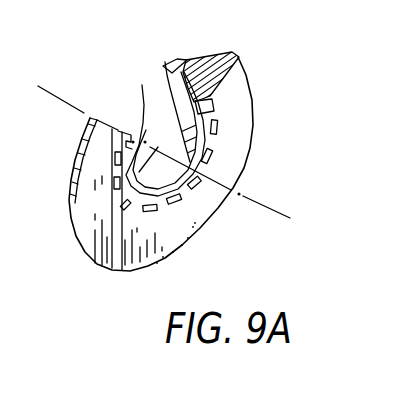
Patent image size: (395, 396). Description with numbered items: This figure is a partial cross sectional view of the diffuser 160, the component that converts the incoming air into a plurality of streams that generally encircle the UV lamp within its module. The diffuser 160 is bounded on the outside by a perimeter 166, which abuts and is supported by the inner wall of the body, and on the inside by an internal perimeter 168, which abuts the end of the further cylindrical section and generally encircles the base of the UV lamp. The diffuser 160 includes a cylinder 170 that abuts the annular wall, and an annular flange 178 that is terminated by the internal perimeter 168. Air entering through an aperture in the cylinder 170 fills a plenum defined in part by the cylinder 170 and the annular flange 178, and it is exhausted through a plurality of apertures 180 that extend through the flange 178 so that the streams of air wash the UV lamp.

The diffuser 160 is at (265, 265).
The perimeter 166 is at (195, 164).
The internal perimeter 168 is at (158, 109).
The cylinder 170 is at (218, 77).
The annular flange 178 is at (181, 141).
The apertures 180 is at (218, 166).